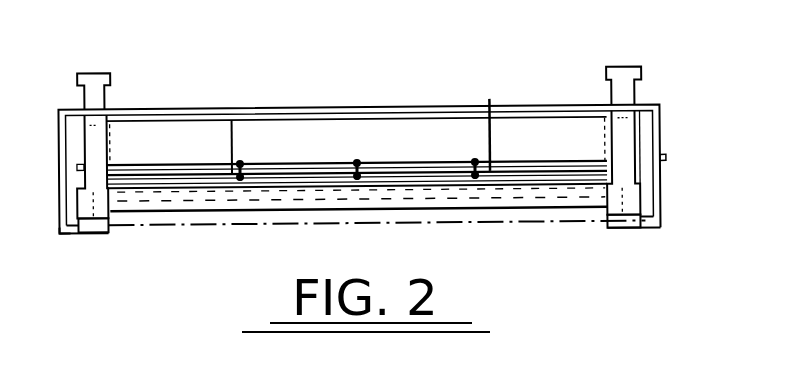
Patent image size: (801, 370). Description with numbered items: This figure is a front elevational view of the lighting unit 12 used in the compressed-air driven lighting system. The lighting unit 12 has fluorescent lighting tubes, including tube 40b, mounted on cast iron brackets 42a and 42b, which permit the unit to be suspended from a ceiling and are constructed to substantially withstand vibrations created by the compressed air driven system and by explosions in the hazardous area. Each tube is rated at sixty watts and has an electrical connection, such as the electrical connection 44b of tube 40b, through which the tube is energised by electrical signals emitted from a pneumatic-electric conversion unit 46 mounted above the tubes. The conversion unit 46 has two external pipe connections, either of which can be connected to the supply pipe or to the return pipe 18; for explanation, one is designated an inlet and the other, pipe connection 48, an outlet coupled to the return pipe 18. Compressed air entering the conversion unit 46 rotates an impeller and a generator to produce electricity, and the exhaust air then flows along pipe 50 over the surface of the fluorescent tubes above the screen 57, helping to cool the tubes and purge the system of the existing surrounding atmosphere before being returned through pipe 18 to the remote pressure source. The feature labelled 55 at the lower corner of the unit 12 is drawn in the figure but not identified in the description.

The lighting unit 12 is at (697, 112).
The return pipe 18 is at (666, 158).
The fluorescent lighting tube 40b is at (188, 214).
The cast iron bracket 42a is at (640, 85).
The cast iron bracket 42b is at (112, 93).
The electrical connection 44b is at (103, 226).
The pneumatic-electric conversion unit 46 is at (258, 117).
The outlet pipe connection 48 is at (488, 103).
The pipe 50 is at (148, 158).
The frame bottom corner 55 is at (59, 235).
The screen 57 is at (495, 223).